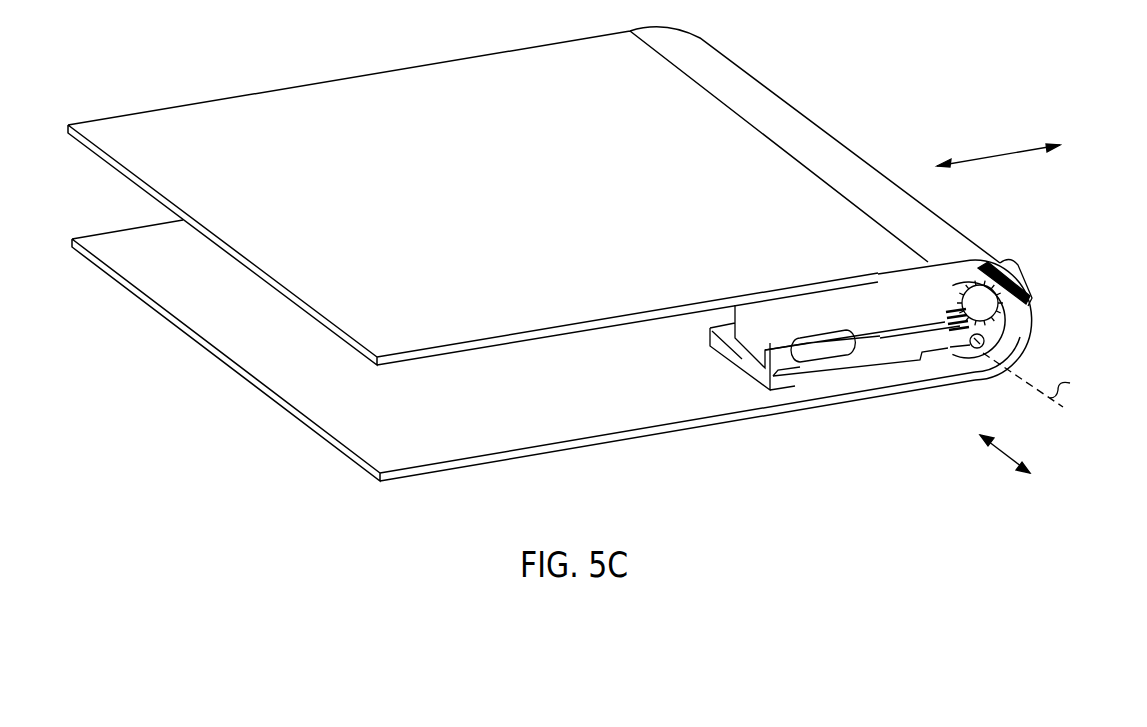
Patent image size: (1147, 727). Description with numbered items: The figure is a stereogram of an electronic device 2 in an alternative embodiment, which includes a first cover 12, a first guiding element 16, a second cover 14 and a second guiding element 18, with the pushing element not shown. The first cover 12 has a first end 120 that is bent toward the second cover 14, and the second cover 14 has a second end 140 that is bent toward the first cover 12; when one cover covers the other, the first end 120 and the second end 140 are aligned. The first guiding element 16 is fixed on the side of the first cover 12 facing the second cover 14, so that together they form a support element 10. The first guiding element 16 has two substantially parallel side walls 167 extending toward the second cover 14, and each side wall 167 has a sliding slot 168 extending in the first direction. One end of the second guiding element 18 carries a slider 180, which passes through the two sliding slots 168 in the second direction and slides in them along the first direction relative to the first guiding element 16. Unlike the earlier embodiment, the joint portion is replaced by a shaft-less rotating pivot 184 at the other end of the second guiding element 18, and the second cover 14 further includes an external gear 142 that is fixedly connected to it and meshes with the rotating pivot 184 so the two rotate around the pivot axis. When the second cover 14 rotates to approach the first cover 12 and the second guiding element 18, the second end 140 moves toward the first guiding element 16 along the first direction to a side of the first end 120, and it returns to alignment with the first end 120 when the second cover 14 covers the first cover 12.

The electronic device 2 is at (1030, 90).
The support element 10 is at (658, 470).
The first cover 12 is at (665, 427).
The second cover 14 is at (793, 192).
The first guiding element 16 is at (740, 360).
The second guiding element 18 is at (946, 444).
The first end 120 is at (1030, 325).
The second end 140 is at (1012, 259).
The external gear 142 is at (997, 318).
The side wall 167 is at (822, 375).
The sliding slot 168 is at (793, 361).
The slider 180 is at (840, 352).
The rotating pivot 184 is at (977, 350).